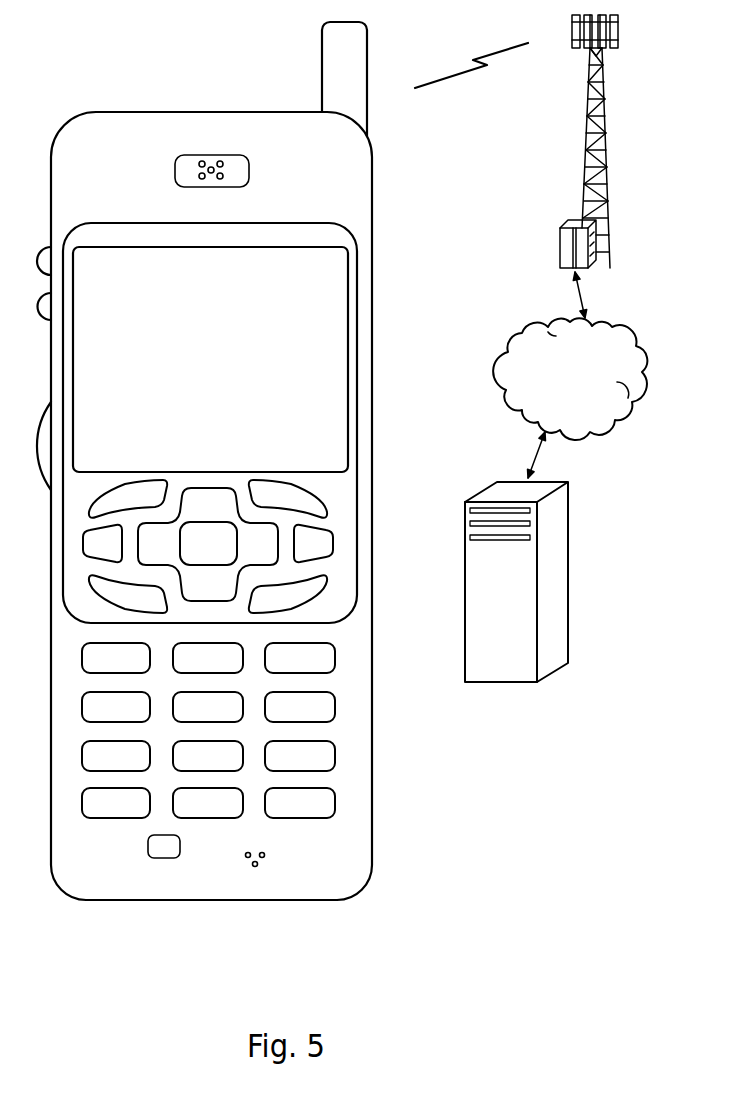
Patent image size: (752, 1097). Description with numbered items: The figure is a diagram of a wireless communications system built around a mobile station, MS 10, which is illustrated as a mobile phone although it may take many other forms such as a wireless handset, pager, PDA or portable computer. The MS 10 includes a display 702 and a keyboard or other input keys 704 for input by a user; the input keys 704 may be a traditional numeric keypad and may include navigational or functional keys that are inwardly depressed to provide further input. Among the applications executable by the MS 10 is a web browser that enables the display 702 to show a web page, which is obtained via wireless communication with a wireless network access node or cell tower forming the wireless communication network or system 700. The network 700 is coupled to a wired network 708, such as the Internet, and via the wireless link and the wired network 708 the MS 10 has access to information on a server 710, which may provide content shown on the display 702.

The mobile station (MS) 10 is at (90, 900).
The display 702 is at (356, 255).
The input keys 704 is at (377, 482).
The wireless communication network or system 700 is at (582, 153).
The wired network 708 is at (518, 413).
The server 710 is at (501, 683).